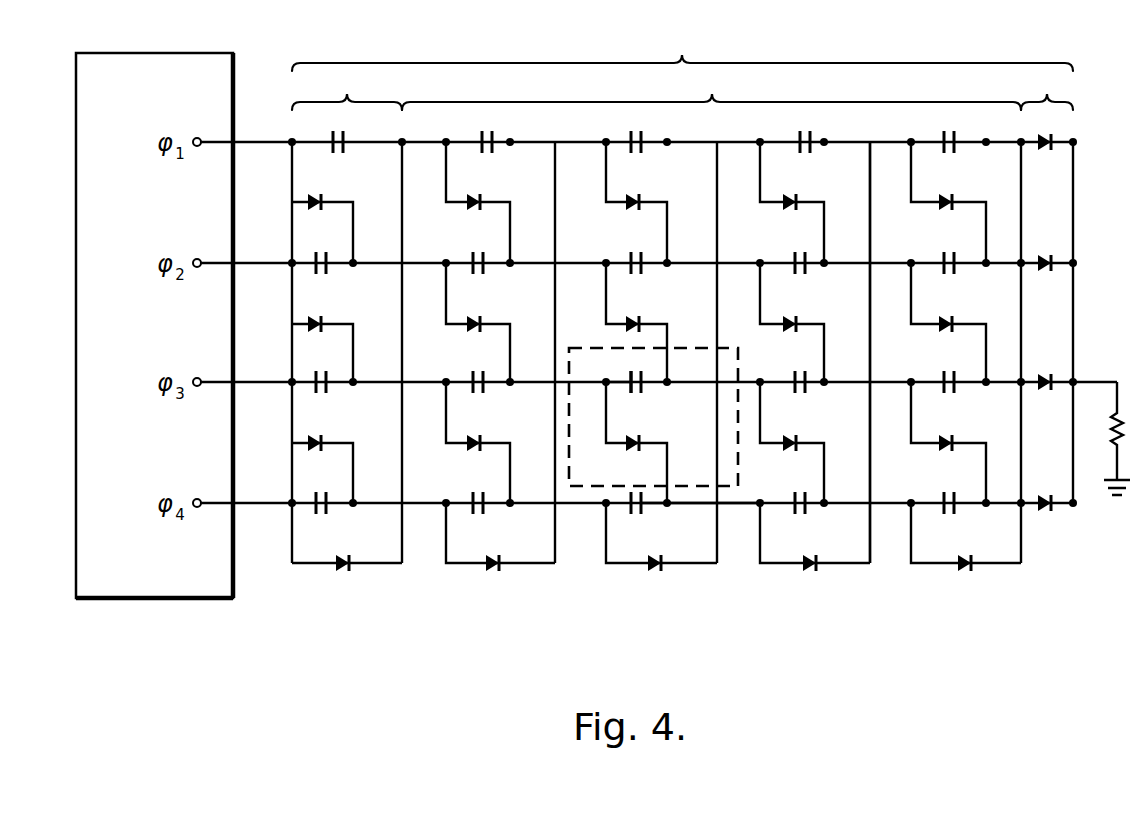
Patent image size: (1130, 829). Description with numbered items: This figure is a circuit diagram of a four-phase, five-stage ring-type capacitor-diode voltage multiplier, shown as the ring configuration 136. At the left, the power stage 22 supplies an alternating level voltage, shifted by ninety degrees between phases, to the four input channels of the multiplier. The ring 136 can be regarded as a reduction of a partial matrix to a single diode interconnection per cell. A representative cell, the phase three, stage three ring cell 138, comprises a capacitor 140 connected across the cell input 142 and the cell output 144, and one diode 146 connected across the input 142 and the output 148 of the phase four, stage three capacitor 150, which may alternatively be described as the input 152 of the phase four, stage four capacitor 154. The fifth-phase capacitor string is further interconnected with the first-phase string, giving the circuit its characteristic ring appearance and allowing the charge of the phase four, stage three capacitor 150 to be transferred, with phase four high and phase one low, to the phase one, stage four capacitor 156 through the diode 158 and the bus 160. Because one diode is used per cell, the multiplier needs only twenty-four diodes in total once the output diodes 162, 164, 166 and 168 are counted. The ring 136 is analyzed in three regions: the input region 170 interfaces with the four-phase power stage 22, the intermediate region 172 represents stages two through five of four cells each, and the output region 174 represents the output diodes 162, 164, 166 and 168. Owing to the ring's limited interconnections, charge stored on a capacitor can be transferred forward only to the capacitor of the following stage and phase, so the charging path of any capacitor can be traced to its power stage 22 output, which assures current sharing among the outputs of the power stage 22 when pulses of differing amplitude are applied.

The power stage 22 is at (234, 60).
The ring configuration 136 is at (682, 47).
The ring cell 138 is at (572, 346).
The capacitor 140 is at (643, 388).
The cell input 142 is at (619, 385).
The cell output 144 is at (638, 371).
The diode 146 is at (632, 450).
The output 148 is at (660, 508).
The phase 4, stage 3 capacitor 150 is at (640, 512).
The input 152 is at (742, 502).
The phase 4, stage 4 capacitor 154 is at (804, 512).
The phase 1, stage 4 capacitor 156 is at (808, 151).
The diode 158 is at (808, 570).
The bus 160 is at (871, 372).
The output diode 162 is at (1046, 150).
The output diode 164 is at (1046, 271).
The output diode 166 is at (1046, 390).
The output diode 168 is at (1046, 511).
The input region 170 is at (347, 89).
The intermediate region 172 is at (711, 89).
The output region 174 is at (1047, 89).